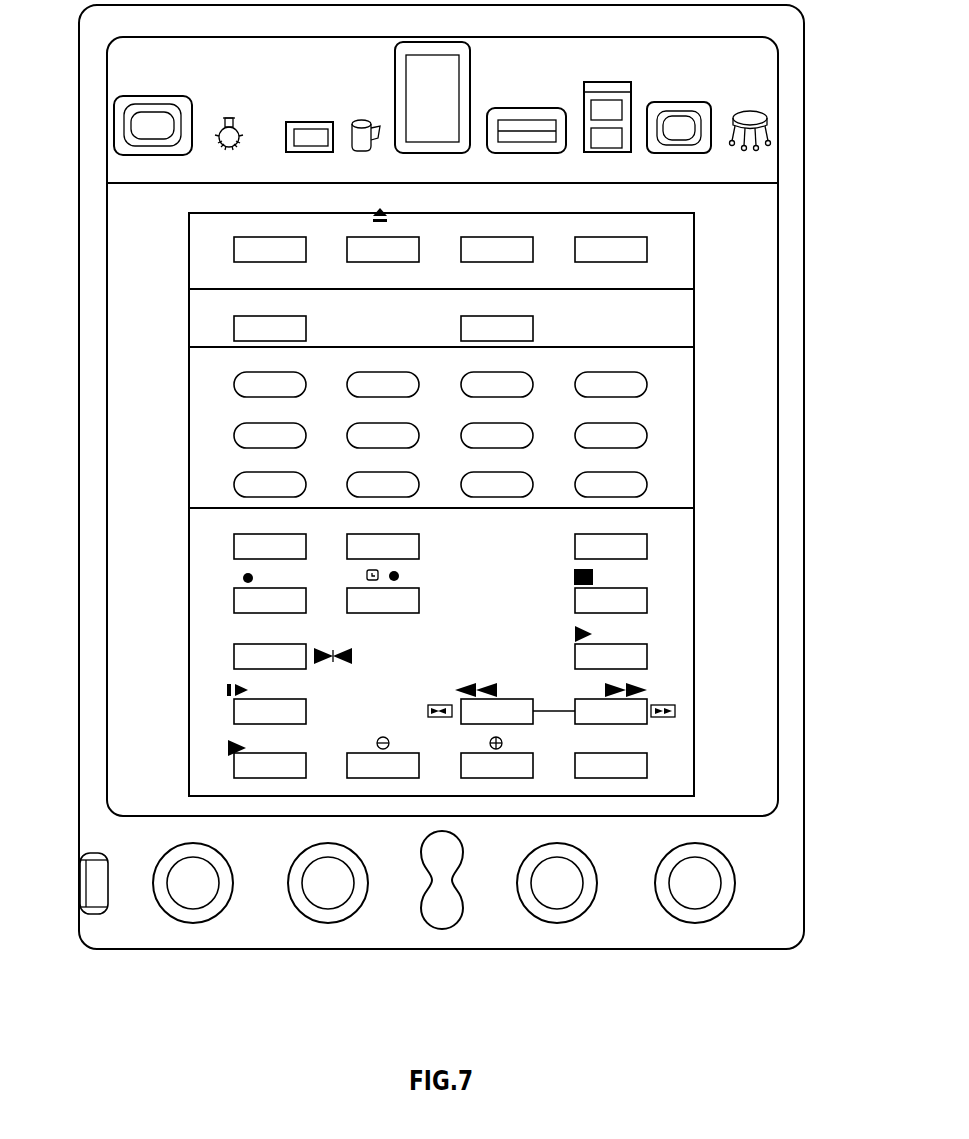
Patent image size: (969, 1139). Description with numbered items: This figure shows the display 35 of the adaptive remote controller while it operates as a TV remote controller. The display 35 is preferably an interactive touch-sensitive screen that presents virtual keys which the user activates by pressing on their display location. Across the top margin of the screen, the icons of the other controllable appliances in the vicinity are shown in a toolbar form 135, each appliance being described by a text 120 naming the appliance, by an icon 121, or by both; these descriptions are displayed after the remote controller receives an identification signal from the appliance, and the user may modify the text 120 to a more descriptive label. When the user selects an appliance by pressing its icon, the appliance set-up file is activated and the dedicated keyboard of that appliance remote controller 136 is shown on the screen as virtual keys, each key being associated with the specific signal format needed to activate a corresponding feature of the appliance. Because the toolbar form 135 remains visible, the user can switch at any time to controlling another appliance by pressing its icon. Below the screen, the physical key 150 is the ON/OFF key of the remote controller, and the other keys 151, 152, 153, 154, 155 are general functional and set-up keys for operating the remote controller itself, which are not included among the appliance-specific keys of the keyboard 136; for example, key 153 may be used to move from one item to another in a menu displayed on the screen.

The display 35 is at (751, 323).
The text 120 is at (243, 153).
The icon 121 is at (470, 58).
The toolbar 135 is at (399, 112).
The appliance remote controller keyboard 136 is at (212, 407).
The ON/OFF key 150 is at (94, 878).
The general functional and set-up key 151 is at (193, 887).
The general functional and set-up key 152 is at (328, 887).
The general functional and set-up key 153 is at (442, 912).
The general functional and set-up key 154 is at (557, 887).
The general functional and set-up key 155 is at (695, 887).